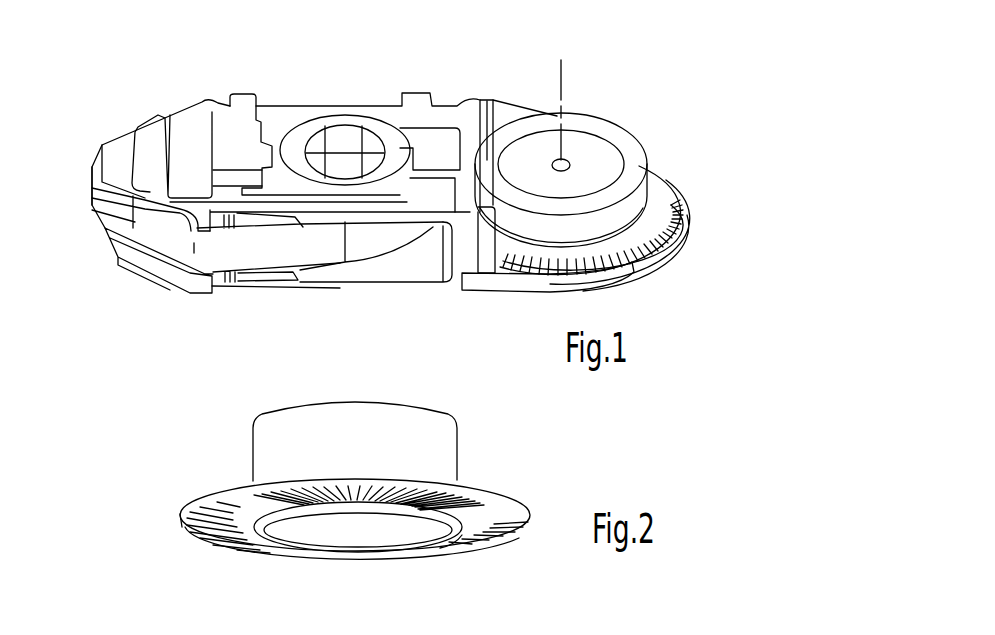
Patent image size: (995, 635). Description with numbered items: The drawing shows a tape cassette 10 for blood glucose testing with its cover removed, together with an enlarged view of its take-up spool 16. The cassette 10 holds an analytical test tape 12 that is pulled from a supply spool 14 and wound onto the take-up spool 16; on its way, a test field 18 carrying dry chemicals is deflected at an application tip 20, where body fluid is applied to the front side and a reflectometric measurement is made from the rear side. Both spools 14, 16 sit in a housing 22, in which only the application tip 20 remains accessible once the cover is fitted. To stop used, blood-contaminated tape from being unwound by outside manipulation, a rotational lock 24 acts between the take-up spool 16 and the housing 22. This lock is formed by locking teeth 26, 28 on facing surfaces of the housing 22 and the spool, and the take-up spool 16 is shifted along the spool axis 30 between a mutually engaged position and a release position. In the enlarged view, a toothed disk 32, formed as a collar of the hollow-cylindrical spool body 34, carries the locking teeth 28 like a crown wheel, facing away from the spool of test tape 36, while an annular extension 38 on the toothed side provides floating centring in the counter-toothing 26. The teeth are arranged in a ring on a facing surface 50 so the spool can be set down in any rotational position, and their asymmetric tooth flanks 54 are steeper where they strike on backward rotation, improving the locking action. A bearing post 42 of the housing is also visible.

In FIG. 1, the tape cassette 10 is at (291, 90).
In FIG. 1, the analytical test tape 12 is at (217, 252).
In FIG. 1, the supply spool 14 is at (424, 228).
In FIG. 1, the take-up spool 16 is at (622, 170).
In FIG. 2, the take-up spool 16 is at (249, 461).
In FIG. 1, the test field 18 is at (118, 213).
In FIG. 1, the application tip 20 is at (92, 214).
In FIG. 1, the housing 22 is at (376, 106).
In FIG. 1, the rotational lock 24 is at (674, 191).
In FIG. 1, the locking teeth 26 is at (685, 214).
In FIG. 2, the locking teeth 28 is at (520, 507).
In FIG. 1, the spool axis 30 is at (561, 74).
In FIG. 2, the toothed disk 32 is at (183, 516).
In FIG. 2, the hollow-cylindrical spool body 34 is at (455, 417).
In FIG. 1, the spool of test tape 36 is at (618, 140).
In FIG. 2, the annular extension 38 is at (460, 540).
In FIG. 1, the bearing post 42 is at (494, 105).
In FIG. 2, the facing surface 50 is at (242, 523).
In FIG. 2, the tooth flank 54 is at (393, 494).